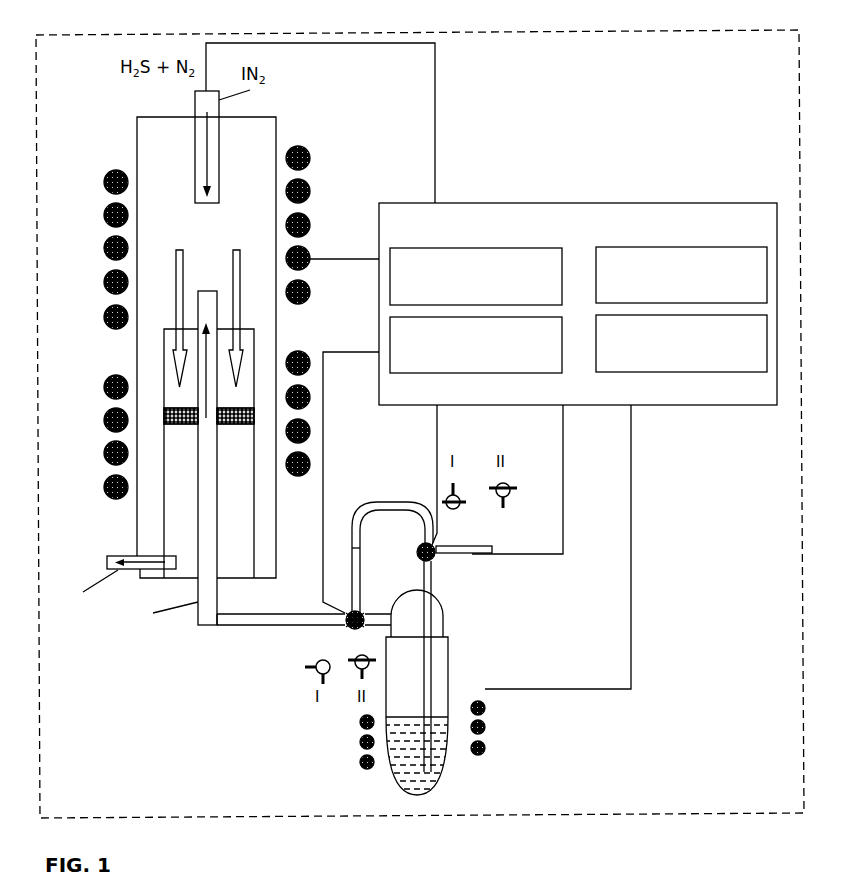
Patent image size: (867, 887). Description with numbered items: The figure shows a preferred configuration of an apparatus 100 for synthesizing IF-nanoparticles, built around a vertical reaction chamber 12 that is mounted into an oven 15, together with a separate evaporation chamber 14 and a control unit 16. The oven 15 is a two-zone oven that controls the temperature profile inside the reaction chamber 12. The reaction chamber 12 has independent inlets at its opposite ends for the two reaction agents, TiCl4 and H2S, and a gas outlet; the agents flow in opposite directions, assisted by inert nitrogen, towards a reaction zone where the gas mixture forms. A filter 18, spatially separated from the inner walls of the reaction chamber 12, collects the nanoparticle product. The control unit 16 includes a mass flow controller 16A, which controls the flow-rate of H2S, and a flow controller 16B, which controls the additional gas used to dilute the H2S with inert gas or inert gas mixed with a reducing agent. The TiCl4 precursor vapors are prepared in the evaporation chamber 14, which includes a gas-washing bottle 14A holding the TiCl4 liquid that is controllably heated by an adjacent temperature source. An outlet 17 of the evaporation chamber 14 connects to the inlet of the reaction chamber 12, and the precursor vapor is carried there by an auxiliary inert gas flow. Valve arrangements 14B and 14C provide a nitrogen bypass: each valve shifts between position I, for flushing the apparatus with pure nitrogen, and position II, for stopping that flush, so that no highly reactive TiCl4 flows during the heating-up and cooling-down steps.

The deposition apparatus 100 is at (745, 0).
The vertical reaction chamber 12 is at (137, 147).
The evaporation chamber 14 is at (388, 678).
The gas-washing bottle 14A is at (397, 781).
The valve arrangement 14B is at (442, 545).
The valve arrangement 14C is at (348, 636).
The oven 15 is at (313, 181).
The control unit 16 is at (578, 284).
The mass flow controller 16A is at (476, 358).
The flow controller 16B is at (681, 358).
The outlet 17 is at (244, 613).
The filter 18 is at (234, 432).